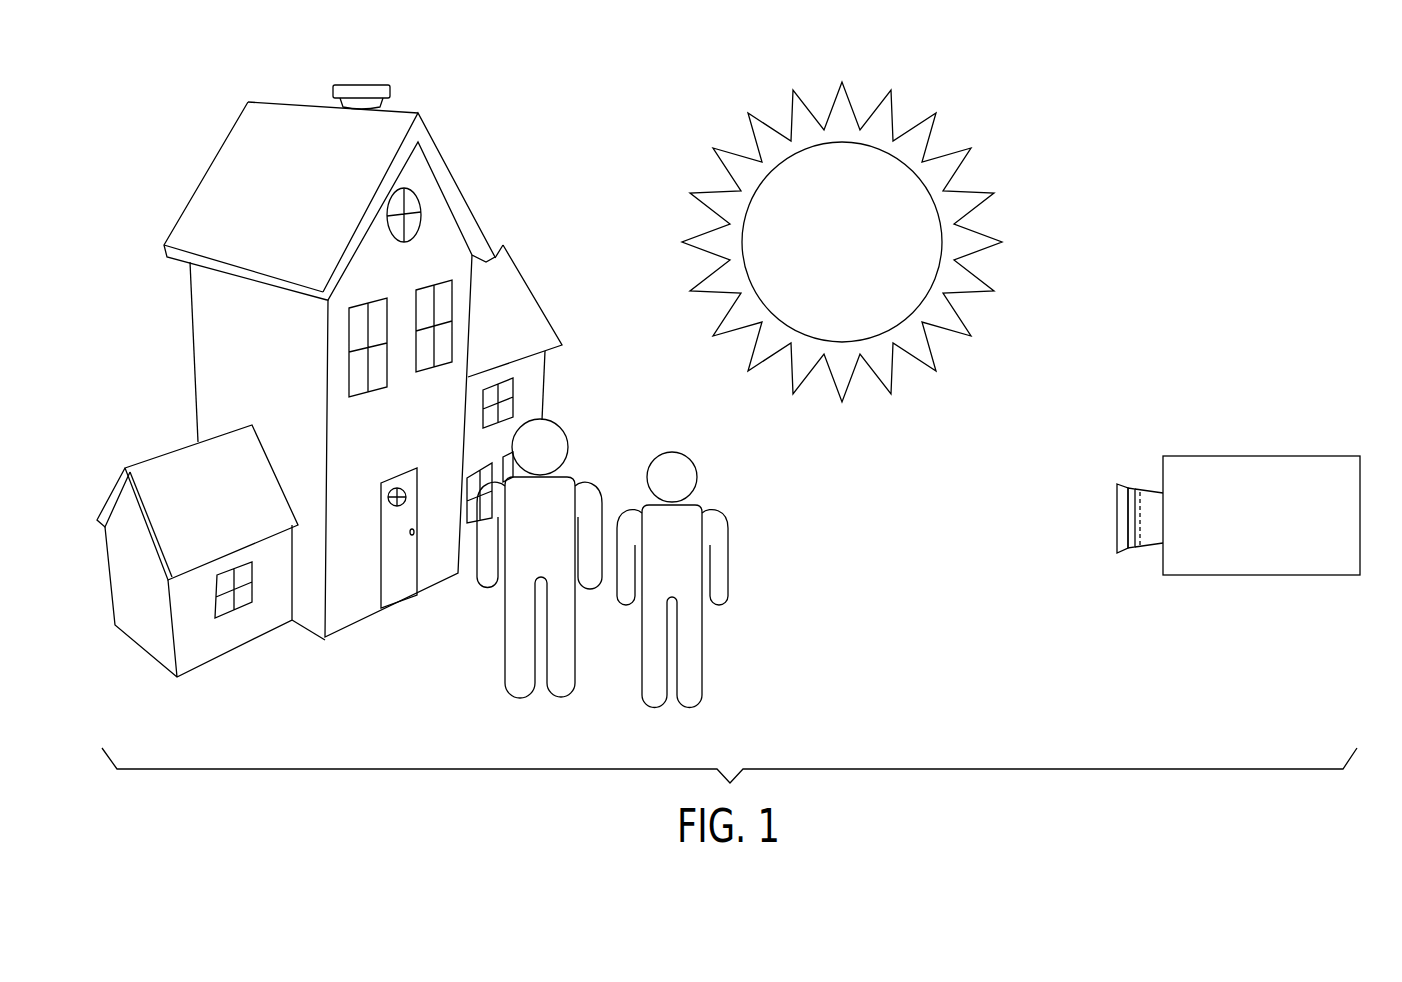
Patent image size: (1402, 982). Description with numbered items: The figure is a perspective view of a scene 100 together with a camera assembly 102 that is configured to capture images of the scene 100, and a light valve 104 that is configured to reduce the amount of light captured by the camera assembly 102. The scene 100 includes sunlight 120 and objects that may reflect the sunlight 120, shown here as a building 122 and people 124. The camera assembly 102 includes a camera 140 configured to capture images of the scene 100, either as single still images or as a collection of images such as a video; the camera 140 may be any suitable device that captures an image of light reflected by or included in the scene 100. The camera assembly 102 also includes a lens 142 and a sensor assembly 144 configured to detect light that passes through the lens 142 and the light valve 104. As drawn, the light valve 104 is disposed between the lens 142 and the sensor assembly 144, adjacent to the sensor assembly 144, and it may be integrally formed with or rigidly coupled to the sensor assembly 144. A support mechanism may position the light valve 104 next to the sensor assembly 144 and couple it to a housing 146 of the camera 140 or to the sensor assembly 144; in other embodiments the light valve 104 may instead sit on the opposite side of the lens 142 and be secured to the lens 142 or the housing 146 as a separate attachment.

The scene 100 is at (378, 670).
The camera assembly 102 is at (1274, 444).
The light valve 104 is at (1132, 488).
The sunlight 120 is at (963, 190).
The building 122 is at (458, 181).
The people 124 is at (655, 680).
The camera 140 is at (1260, 576).
The lens 142 is at (1117, 520).
The sensor assembly 144 is at (1143, 487).
The housing 146 is at (1148, 549).